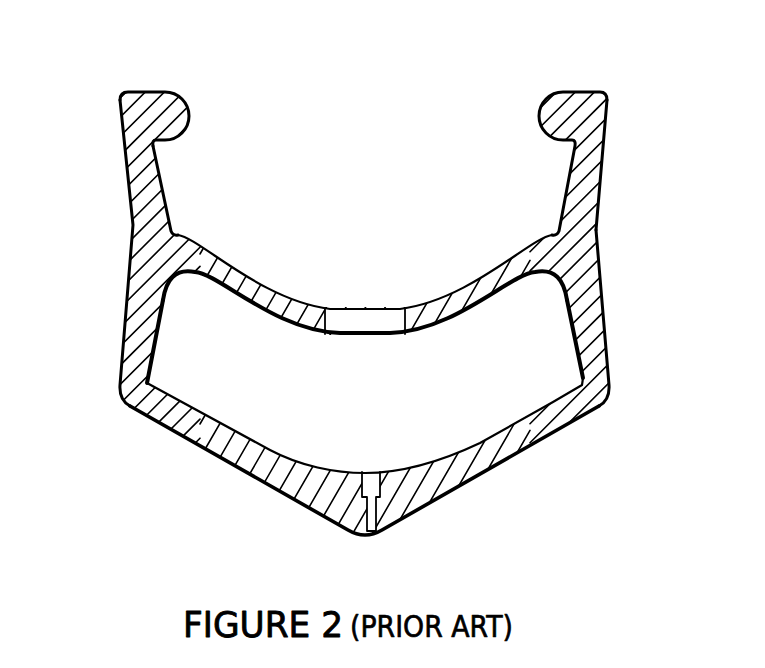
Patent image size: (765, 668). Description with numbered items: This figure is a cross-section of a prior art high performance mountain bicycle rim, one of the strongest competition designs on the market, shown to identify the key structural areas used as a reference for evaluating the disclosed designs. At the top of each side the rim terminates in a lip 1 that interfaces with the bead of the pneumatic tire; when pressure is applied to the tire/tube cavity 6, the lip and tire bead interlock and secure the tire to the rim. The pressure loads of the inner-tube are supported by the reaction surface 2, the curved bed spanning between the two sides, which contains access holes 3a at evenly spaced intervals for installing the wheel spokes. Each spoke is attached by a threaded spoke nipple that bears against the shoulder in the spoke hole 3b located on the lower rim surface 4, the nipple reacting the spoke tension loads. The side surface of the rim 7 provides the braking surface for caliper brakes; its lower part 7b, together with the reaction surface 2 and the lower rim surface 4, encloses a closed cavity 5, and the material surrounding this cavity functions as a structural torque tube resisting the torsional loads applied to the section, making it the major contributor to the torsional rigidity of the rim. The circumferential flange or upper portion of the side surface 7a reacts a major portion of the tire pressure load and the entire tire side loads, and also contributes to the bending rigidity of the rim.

The lip 1 is at (185, 95).
The reaction surface 2 is at (244, 272).
The access holes 3a is at (366, 309).
The spoke hole 3b is at (368, 472).
The lower rim surface 4 is at (465, 478).
The closed cavity 5 is at (242, 380).
The tire/tube cavity 6 is at (410, 167).
The side surface of the rim 7 is at (128, 208).
The upper portion of the side surface 7a is at (590, 215).
The lower part of the side surface 7b is at (602, 317).